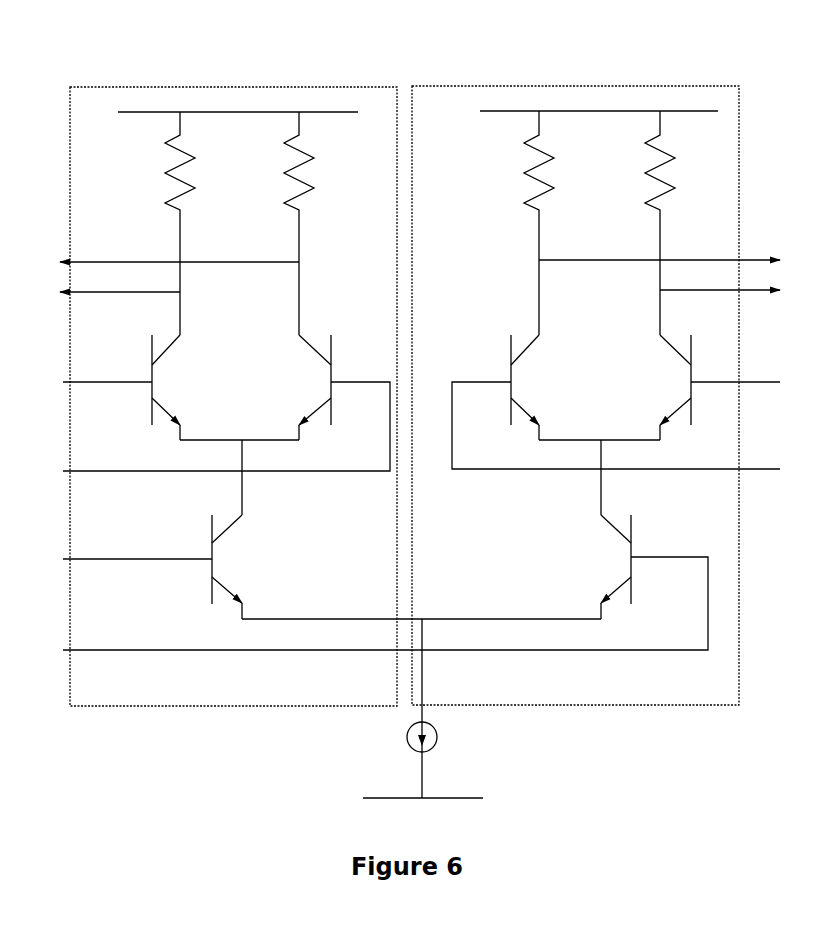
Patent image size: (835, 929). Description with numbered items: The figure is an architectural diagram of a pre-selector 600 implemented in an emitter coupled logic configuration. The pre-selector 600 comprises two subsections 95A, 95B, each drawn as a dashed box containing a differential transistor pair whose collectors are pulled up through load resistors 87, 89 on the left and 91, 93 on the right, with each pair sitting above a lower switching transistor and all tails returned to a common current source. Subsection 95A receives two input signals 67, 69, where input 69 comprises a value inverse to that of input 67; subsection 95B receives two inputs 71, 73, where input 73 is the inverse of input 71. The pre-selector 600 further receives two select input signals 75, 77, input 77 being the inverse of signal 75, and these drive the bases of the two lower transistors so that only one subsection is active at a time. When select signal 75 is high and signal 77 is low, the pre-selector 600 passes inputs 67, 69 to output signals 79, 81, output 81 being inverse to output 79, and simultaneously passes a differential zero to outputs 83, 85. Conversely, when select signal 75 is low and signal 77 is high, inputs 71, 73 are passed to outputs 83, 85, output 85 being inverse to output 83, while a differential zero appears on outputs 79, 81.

The pre-selector 600 is at (408, 407).
The subsection 95A is at (205, 384).
The subsection 95B is at (607, 383).
The load resistor 87 is at (153, 223).
The load resistor 89 is at (310, 223).
The load resistor 91 is at (511, 223).
The load resistor 93 is at (669, 223).
The output signal 79 is at (156, 262).
The output signal 81 is at (97, 285).
The output signal 83 is at (671, 259).
The output signal 85 is at (731, 281).
The input signal 67 is at (83, 386).
The input signal 69 is at (202, 435).
The input signal 71 is at (747, 381).
The input signal 73 is at (627, 433).
The select input signal 75 is at (113, 555).
The select input signal 77 is at (361, 607).